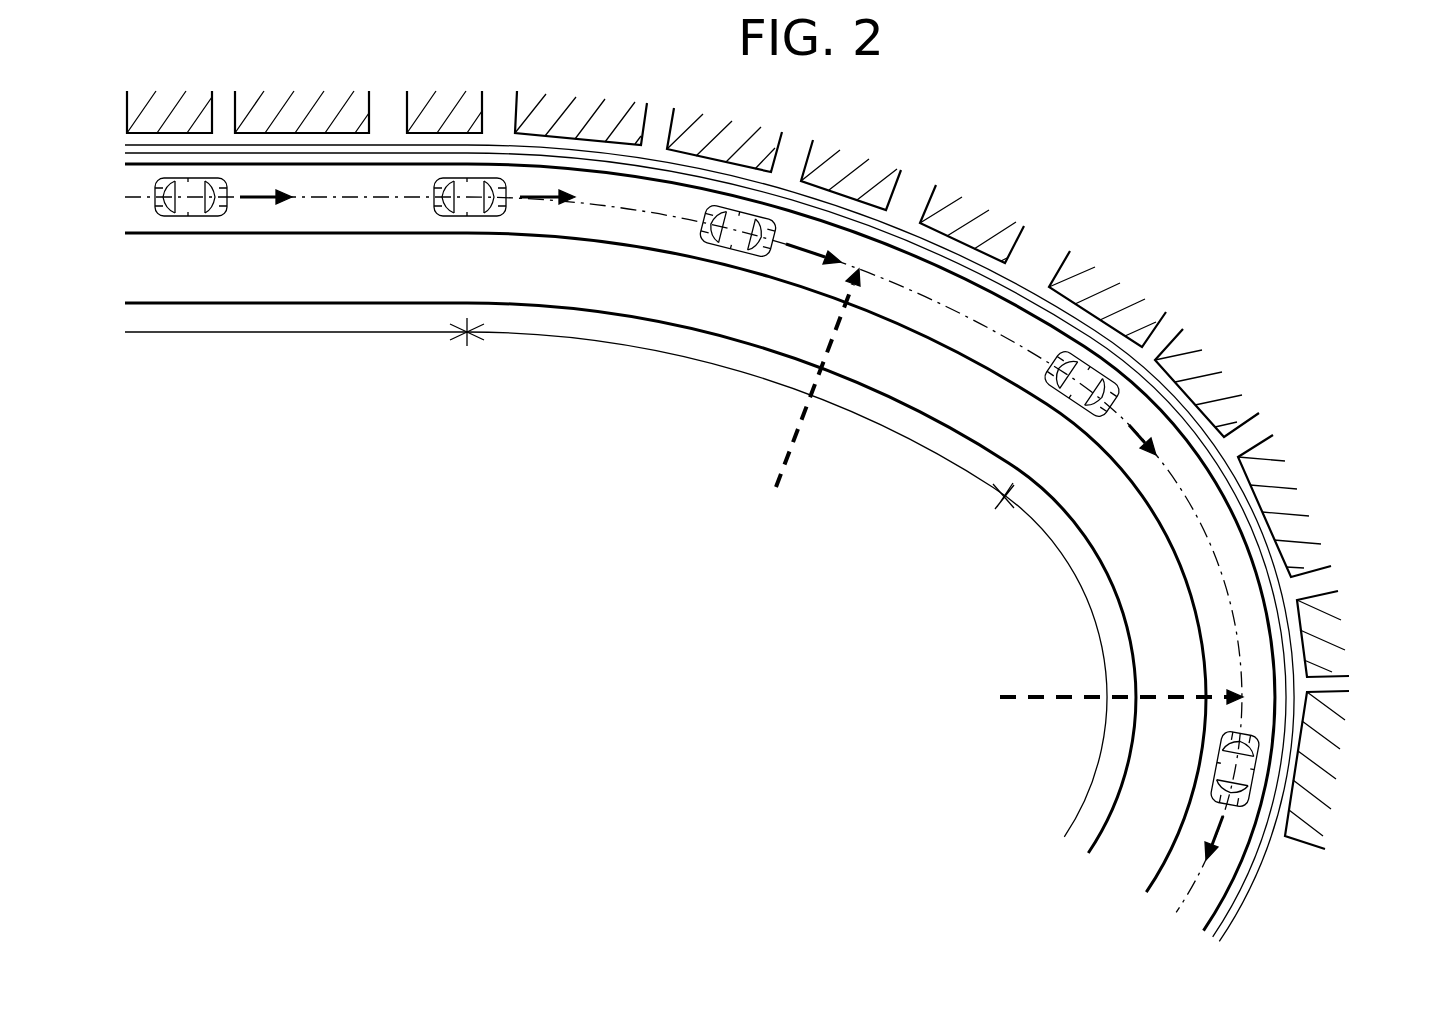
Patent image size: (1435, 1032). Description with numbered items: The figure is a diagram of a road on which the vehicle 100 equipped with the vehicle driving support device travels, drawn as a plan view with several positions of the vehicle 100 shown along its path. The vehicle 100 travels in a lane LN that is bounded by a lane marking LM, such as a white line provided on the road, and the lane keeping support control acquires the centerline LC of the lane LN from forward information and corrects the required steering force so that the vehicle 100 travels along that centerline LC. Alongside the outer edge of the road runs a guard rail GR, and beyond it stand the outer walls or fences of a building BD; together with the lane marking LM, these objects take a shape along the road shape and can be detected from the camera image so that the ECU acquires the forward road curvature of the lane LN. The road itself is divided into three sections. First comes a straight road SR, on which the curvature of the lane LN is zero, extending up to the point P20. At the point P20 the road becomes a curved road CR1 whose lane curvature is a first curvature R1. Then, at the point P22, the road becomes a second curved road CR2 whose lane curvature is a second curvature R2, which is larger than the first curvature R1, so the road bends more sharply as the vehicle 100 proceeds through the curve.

The vehicle 100 is at (185, 213).
The building BD is at (175, 107).
The guard rail GR is at (505, 140).
The lane marking LM is at (650, 178).
The lane LN is at (385, 226).
The centerline LC is at (607, 207).
The straight road SR is at (284, 364).
The curved road CR1 is at (782, 378).
The curved road CR2 is at (1121, 659).
The first curvature R1 is at (809, 378).
The second curvature R2 is at (1121, 685).
The point P20 is at (466, 349).
The point P22 is at (989, 515).